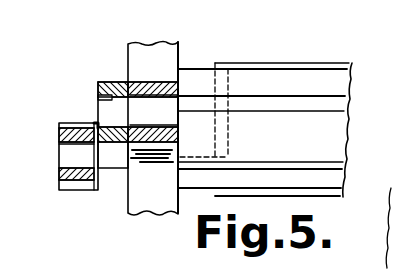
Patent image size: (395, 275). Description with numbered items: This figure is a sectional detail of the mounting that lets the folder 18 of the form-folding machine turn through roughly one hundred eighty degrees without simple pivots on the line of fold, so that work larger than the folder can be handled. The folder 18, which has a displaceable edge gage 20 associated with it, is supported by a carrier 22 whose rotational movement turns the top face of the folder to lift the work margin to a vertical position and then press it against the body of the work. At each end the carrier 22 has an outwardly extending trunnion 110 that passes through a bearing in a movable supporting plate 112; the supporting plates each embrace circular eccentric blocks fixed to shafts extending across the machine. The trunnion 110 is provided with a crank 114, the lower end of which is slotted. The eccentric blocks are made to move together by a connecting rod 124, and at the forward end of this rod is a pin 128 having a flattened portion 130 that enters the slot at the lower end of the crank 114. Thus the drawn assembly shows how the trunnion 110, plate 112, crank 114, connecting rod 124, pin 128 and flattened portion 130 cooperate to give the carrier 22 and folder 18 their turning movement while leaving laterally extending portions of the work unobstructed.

The folder 18 is at (325, 85).
The displaceable edge gage 20 is at (310, 192).
The carrier 22 is at (320, 127).
The trunnions 110 is at (150, 108).
The movable supporting plates 112 is at (157, 197).
The crank 114 is at (120, 126).
The connecting rod 124 is at (63, 122).
The pin 128 is at (78, 153).
The flattened portion 130 is at (122, 153).